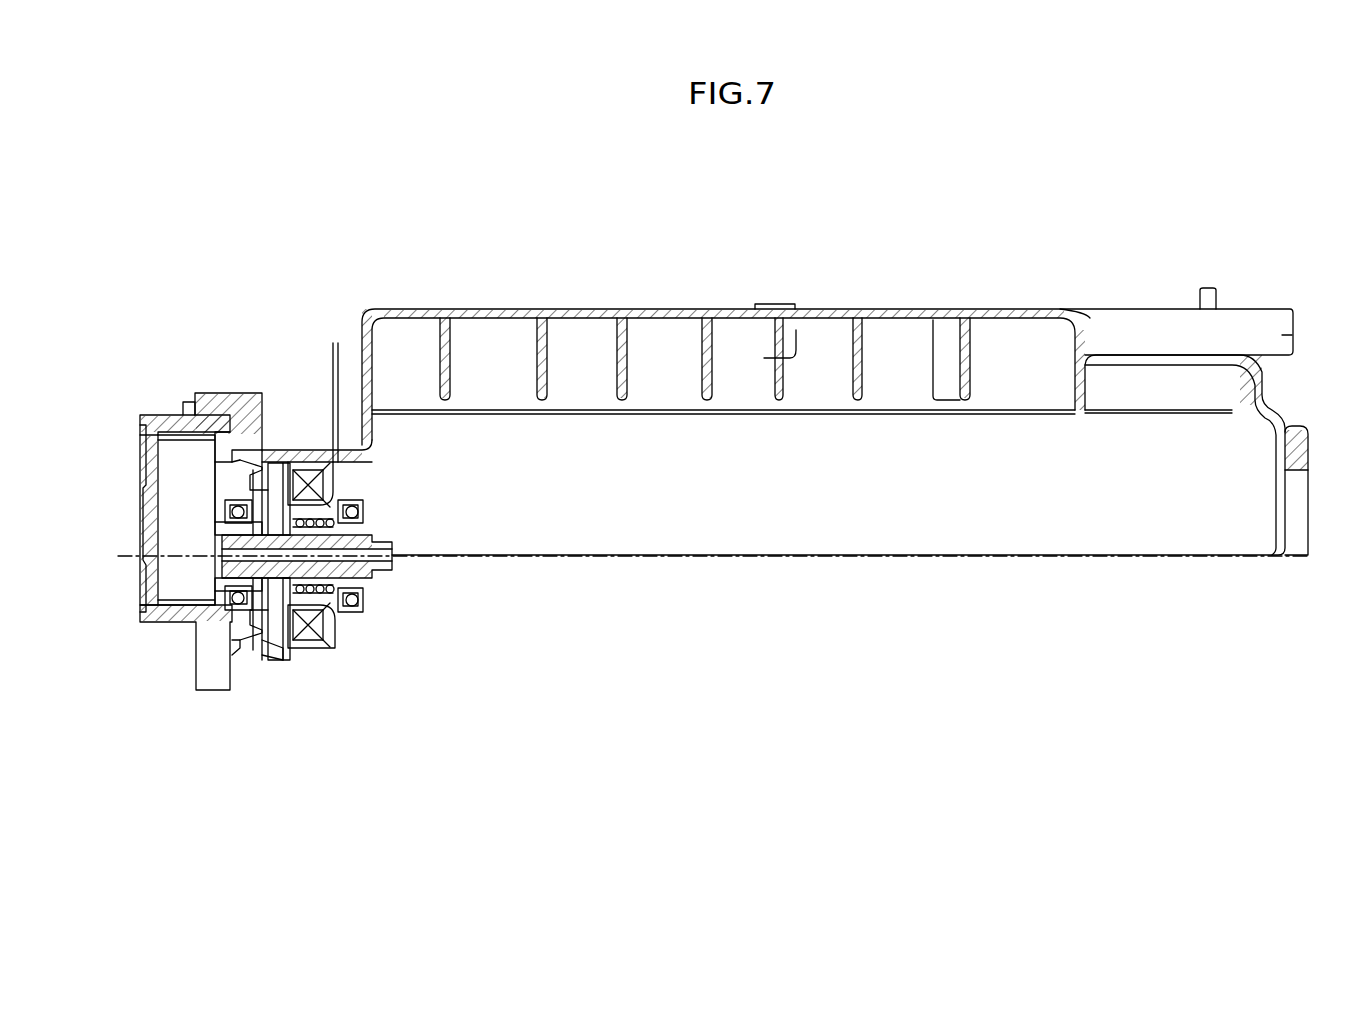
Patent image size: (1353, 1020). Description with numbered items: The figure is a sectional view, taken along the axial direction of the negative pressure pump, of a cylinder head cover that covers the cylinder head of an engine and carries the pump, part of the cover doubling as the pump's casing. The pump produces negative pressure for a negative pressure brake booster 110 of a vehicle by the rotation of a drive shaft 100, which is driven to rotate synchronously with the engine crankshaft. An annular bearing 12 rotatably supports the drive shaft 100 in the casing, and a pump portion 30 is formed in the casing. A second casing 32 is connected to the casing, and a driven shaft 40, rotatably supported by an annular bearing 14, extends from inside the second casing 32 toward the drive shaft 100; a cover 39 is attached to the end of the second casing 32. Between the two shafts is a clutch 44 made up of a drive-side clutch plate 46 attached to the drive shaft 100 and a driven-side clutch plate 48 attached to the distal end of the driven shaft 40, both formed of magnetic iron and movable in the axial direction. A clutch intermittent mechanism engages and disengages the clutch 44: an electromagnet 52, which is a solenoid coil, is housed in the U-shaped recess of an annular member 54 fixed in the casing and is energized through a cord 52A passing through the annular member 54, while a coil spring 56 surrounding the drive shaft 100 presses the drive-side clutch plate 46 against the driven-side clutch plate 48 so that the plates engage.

The negative pressure brake booster 110 is at (390, 263).
The drive shaft 100 is at (375, 580).
The bearing 12 is at (365, 600).
The bearing 14 is at (222, 596).
The pump portion 30 is at (170, 622).
The second casing 32 is at (165, 415).
The cover 39 is at (143, 426).
The driven shaft 40 is at (215, 530).
The clutch 44 is at (325, 752).
The drive-side clutch plate 46 is at (275, 655).
The driven-side clutch plate 48 is at (237, 640).
The electromagnet 52 is at (310, 637).
The cord 52A is at (333, 363).
The annular member 54 is at (340, 645).
The coil spring 56 is at (320, 614).